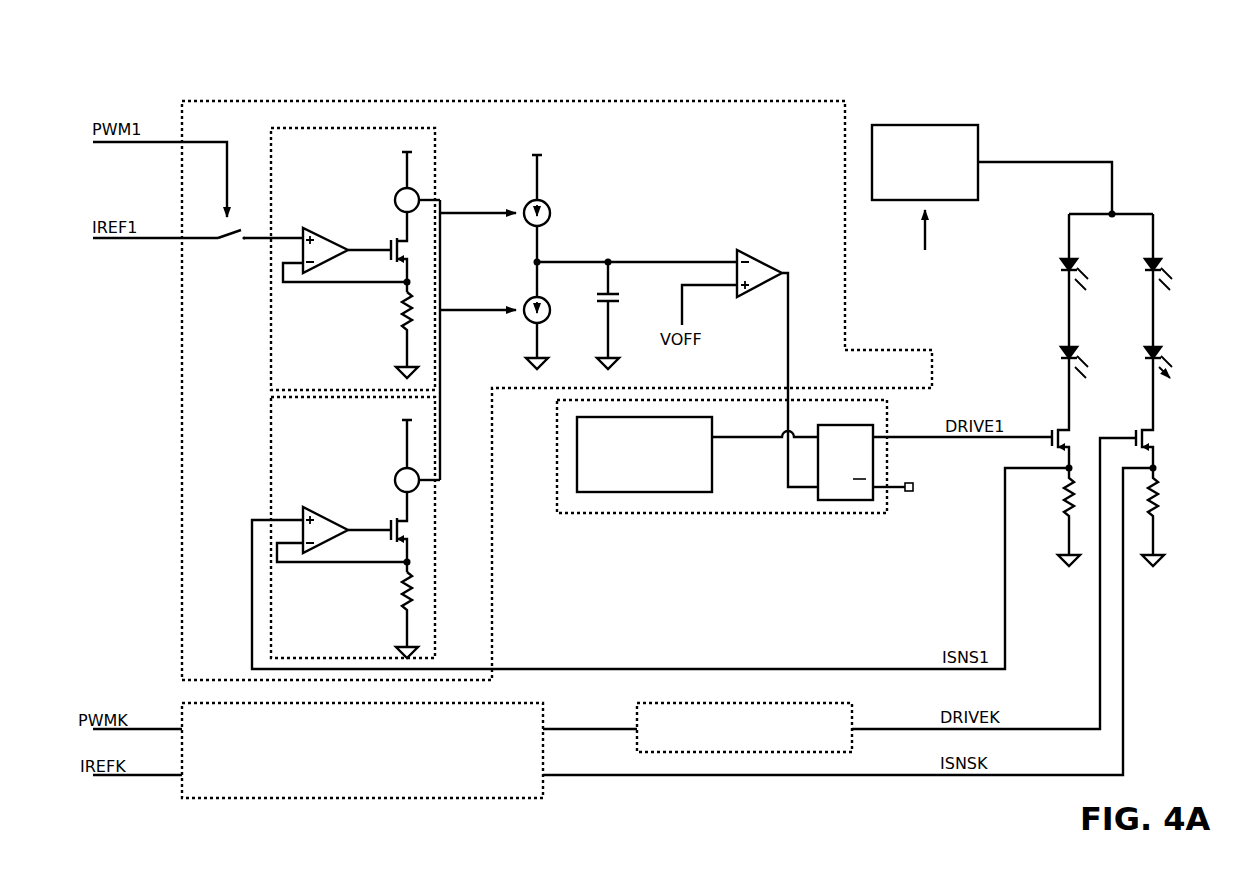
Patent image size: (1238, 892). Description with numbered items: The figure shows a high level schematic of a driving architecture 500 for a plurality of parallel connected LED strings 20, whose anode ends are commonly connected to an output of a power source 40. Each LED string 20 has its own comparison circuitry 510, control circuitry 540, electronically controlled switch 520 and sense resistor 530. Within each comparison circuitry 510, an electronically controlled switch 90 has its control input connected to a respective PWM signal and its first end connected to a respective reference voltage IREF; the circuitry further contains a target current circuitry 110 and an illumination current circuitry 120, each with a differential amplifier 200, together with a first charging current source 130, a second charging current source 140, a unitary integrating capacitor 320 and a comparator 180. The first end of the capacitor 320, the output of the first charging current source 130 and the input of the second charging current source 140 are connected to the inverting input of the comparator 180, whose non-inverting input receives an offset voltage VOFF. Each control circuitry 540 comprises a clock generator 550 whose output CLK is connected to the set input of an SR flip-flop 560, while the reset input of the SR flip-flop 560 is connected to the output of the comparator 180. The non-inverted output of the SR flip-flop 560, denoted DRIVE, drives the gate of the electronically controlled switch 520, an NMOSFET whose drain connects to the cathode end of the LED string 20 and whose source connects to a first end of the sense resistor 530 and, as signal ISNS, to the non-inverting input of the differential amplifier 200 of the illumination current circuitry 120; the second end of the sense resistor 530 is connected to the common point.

The LED string 20 is at (1068, 239).
The power source 40 is at (925, 124).
The electronically controlled switch 90 is at (225, 246).
The target current circuitry 110 is at (271, 356).
The illumination current circuitry 120 is at (271, 439).
The first charging current source 130 is at (550, 213).
The second charging current source 140 is at (525, 299).
The comparator 180 is at (764, 257).
The differential amplifier 200 is at (324, 510).
The capacitor 320 is at (603, 302).
The driving architecture 500 is at (1158, 124).
The comparison circuitry 510 is at (182, 327).
The electronically controlled switch 520 is at (1058, 426).
The sense resistor 530 is at (1061, 504).
The control circuitry 540 is at (705, 513).
The clock generator 550 is at (642, 492).
The SR flip-flop 560 is at (838, 500).